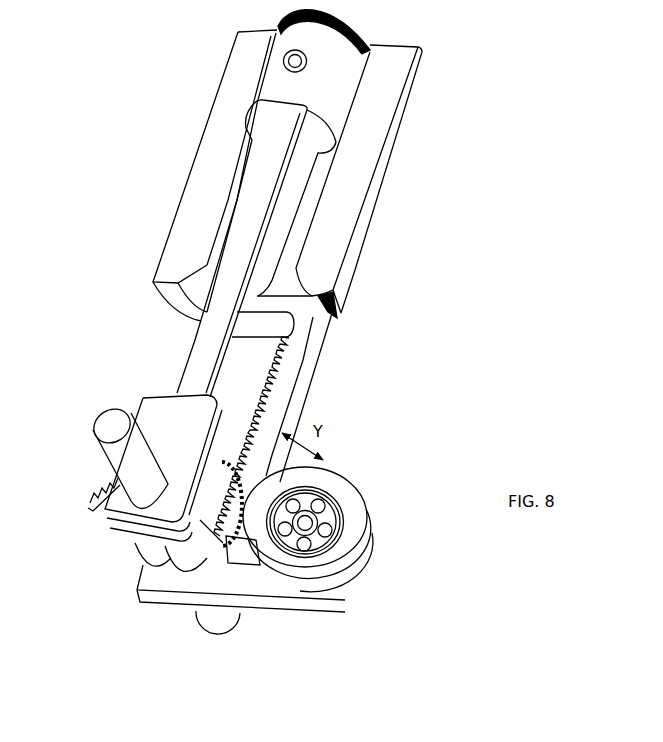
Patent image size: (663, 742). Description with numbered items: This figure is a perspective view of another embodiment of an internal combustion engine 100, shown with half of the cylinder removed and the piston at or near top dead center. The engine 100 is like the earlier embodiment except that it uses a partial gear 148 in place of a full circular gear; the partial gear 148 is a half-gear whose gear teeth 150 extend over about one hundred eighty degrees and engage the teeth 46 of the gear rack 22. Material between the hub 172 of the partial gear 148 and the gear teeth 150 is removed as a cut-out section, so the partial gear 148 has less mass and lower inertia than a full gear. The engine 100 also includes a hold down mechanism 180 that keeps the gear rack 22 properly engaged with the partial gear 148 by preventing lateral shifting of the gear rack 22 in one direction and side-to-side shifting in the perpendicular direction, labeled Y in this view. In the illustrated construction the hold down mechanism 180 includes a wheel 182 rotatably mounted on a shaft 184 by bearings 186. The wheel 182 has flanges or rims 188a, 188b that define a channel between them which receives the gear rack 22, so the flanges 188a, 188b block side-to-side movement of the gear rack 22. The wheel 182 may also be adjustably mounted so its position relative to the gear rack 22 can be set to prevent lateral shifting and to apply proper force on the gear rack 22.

The internal combustion engine 100 is at (413, 300).
The gear rack 22 is at (296, 398).
The teeth 46 is at (267, 403).
The gear teeth 150 is at (92, 492).
The partial gear 148 is at (212, 527).
The hub 172 is at (163, 557).
The hold down mechanism 180 is at (358, 500).
The wheel 182 is at (352, 530).
The shaft 184 is at (303, 523).
The bearings 186 is at (340, 500).
The flange 188a is at (375, 527).
The flange 188b is at (347, 602).